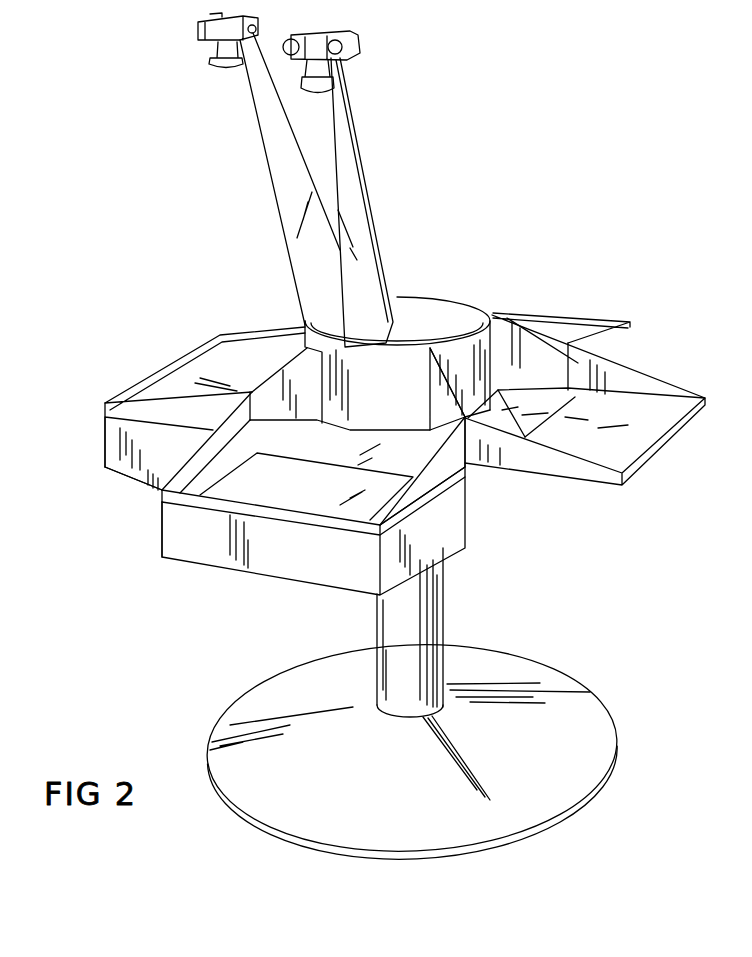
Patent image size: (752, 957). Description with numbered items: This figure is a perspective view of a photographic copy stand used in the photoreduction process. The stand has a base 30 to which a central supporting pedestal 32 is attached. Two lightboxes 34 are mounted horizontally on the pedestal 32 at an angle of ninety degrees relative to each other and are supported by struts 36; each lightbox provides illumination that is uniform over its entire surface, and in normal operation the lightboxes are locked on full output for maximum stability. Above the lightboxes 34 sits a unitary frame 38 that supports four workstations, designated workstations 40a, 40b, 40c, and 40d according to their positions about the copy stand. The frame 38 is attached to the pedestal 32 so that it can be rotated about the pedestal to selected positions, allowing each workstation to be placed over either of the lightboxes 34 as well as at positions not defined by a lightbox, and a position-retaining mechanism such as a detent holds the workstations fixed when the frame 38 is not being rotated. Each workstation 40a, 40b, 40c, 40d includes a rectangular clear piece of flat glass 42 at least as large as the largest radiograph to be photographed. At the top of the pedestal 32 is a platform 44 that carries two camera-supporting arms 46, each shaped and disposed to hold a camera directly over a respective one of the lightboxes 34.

The base 30 is at (482, 650).
The central supporting pedestal 32 is at (445, 587).
The lightbox 34 is at (105, 441).
The strut 36 is at (145, 488).
The unitary frame 38 is at (533, 397).
The workstation 40a is at (674, 463).
The workstation 40b is at (193, 584).
The workstation 40c is at (118, 350).
The workstation 40d is at (580, 306).
The flat glass 42 is at (218, 362).
The platform 44 is at (417, 300).
The camera-supporting arm 46 is at (265, 146).